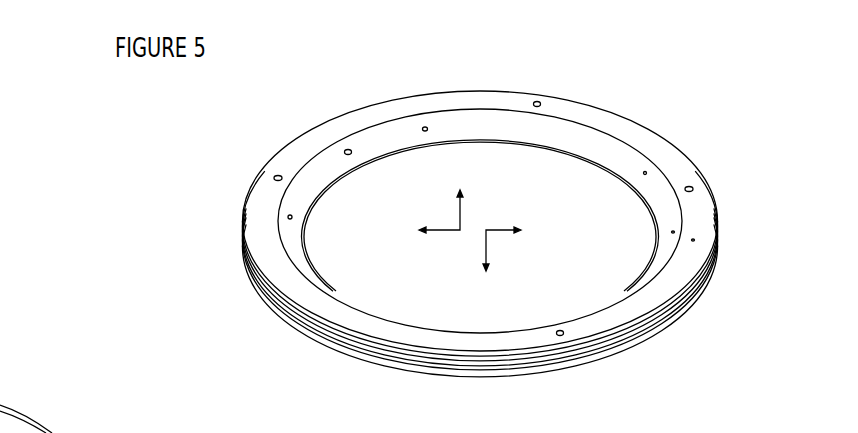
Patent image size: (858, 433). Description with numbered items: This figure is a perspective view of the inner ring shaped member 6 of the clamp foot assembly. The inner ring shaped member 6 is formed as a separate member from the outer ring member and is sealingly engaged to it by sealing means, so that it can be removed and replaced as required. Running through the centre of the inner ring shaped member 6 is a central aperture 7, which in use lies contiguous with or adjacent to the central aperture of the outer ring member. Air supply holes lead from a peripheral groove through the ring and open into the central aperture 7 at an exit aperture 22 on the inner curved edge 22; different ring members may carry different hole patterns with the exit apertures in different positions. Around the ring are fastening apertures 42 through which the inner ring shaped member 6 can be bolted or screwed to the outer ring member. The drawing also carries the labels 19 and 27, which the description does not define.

The inner ring shaped member 6 is at (400, 234).
The central aperture 7 is at (470, 230).
The outer flange rim 19 is at (690, 258).
The exit aperture 22 is at (542, 163).
The aperture 27 is at (277, 121).
The fastening apertures 42 is at (483, 220).